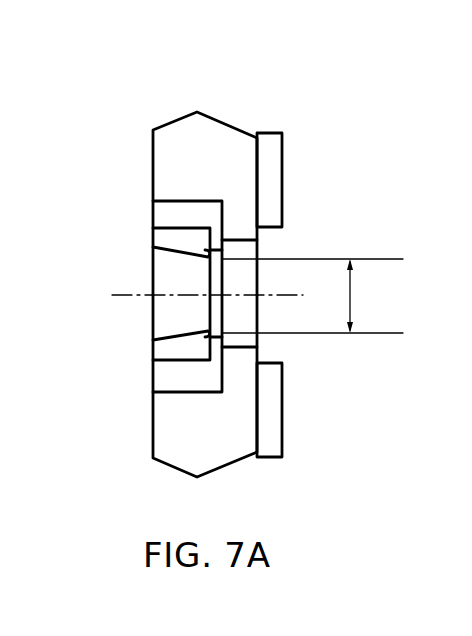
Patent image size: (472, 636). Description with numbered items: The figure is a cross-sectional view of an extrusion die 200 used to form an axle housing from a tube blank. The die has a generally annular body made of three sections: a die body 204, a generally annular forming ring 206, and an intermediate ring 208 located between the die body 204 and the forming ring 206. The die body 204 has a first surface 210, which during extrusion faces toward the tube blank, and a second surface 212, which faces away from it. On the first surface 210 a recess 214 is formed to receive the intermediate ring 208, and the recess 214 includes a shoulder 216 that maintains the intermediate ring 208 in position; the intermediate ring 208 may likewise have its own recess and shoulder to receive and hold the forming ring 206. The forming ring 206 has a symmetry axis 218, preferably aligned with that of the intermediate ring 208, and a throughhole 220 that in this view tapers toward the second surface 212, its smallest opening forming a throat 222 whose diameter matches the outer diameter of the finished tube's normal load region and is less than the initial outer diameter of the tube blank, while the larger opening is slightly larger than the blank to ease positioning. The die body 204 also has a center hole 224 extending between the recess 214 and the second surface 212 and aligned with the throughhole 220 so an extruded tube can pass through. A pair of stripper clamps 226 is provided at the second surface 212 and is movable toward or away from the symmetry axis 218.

The extrusion die 200 is at (294, 114).
The die body 204 is at (178, 152).
The forming ring 206 is at (175, 240).
The intermediate ring 208 is at (165, 215).
The first surface 210 is at (152, 440).
The second surface 212 is at (258, 436).
The recess 214 is at (209, 217).
The shoulder 216 is at (223, 227).
The symmetry axis 218 is at (130, 297).
The throughhole 220 is at (153, 336).
The throat 222 is at (258, 243).
The center hole 224 is at (257, 338).
The stripper clamps 226 is at (282, 415).